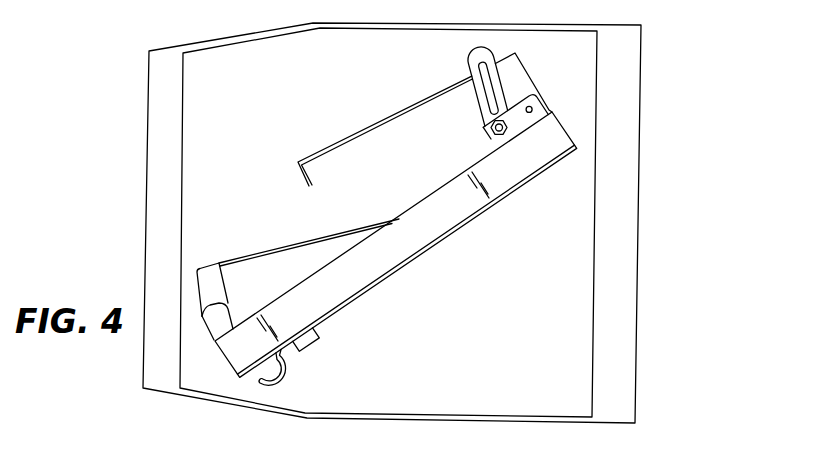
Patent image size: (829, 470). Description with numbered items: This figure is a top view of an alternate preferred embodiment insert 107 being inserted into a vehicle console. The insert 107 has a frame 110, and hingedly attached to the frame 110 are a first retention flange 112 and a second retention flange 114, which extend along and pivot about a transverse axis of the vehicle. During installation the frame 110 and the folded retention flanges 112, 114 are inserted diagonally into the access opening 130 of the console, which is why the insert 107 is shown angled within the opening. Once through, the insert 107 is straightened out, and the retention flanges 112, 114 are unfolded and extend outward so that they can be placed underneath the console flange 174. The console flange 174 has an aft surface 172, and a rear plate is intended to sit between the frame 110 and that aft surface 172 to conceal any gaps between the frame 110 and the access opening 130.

The insert 107 is at (374, 292).
The frame 110 is at (423, 200).
The first retention flange 112 is at (388, 116).
The second retention flange 114 is at (295, 243).
The access opening 130 is at (418, 245).
The aft surface 172 is at (585, 339).
The console flange 174 is at (620, 238).